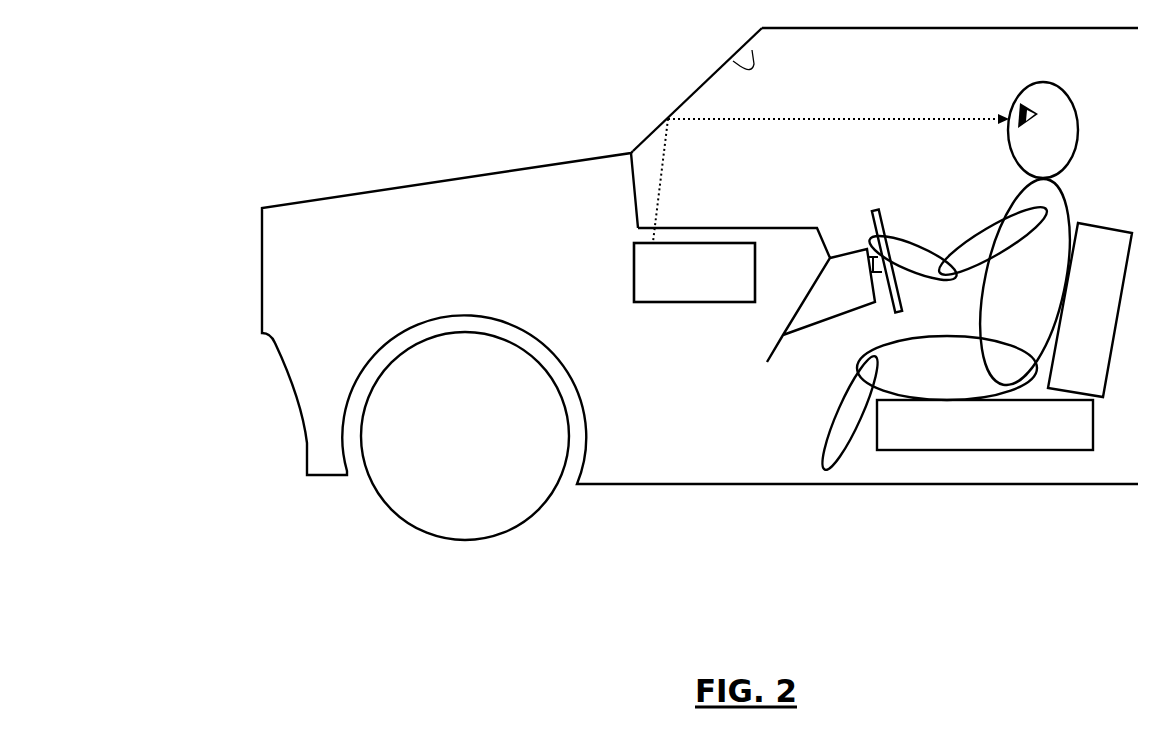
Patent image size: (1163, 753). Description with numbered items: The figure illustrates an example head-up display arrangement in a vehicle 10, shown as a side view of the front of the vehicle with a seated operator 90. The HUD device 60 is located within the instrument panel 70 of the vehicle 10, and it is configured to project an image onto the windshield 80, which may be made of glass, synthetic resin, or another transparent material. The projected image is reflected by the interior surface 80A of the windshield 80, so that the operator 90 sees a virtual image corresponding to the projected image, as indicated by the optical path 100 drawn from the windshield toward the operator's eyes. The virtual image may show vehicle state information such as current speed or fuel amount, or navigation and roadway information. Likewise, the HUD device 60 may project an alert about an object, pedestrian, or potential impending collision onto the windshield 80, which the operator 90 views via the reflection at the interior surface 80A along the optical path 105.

The vehicle 10 is at (450, 180).
The HUD device 60 is at (634, 272).
The instrument panel 70 is at (780, 228).
The windshield 80 is at (707, 78).
The interior surface 80A is at (752, 50).
The operator 90 is at (1077, 110).
The optical path 100 is at (831, 162).
The optical path 105 is at (800, 119).